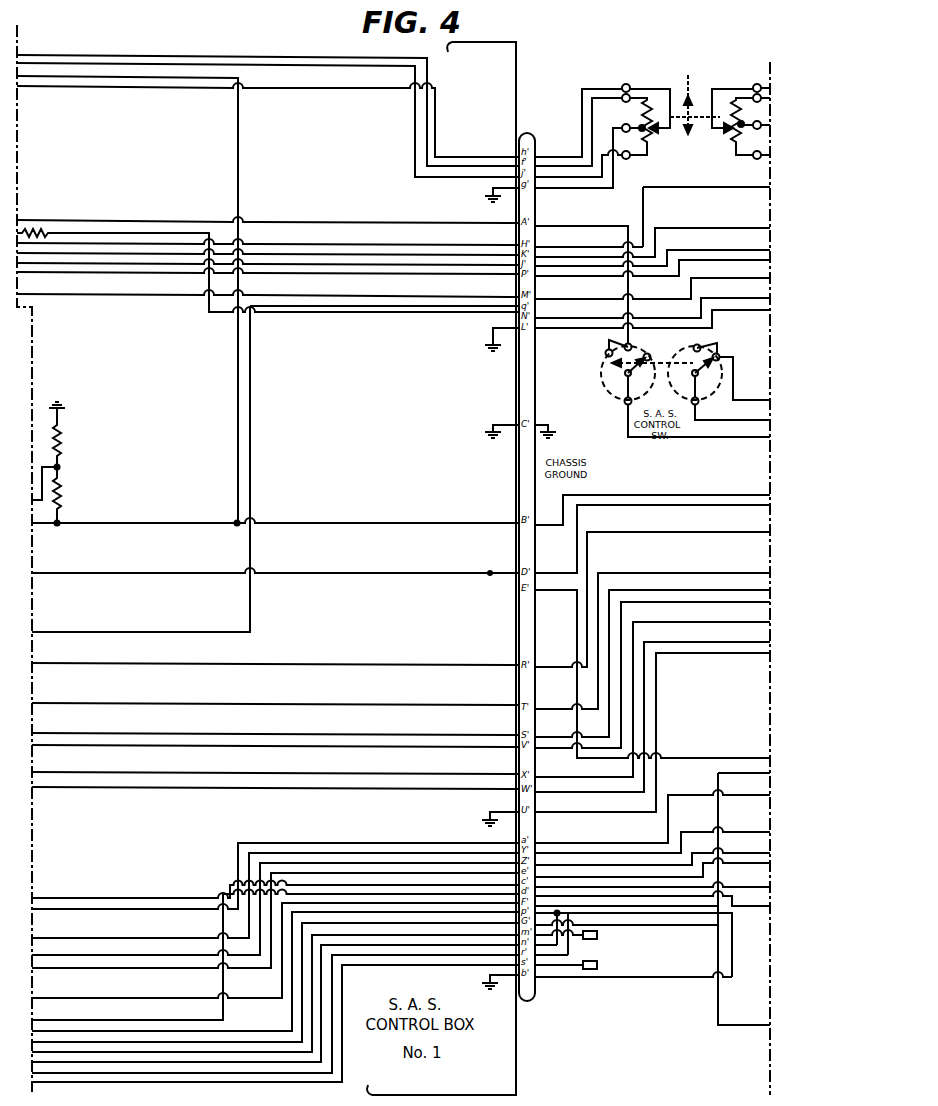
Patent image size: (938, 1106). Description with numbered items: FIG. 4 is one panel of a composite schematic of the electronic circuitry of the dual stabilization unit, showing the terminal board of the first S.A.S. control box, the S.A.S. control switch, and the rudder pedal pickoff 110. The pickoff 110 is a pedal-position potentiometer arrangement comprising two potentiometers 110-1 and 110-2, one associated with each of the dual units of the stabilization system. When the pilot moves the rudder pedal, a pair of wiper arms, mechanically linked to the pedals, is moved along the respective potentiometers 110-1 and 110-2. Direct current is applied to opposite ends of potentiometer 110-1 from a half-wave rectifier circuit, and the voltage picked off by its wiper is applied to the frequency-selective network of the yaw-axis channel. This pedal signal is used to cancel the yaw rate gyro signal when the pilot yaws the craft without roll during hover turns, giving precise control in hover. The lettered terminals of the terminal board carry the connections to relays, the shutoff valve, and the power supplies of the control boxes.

The rudder pedal pickoff 110 is at (716, 120).
The potentiometer 110-1 is at (646, 108).
The potentiometer 110-2 is at (747, 112).